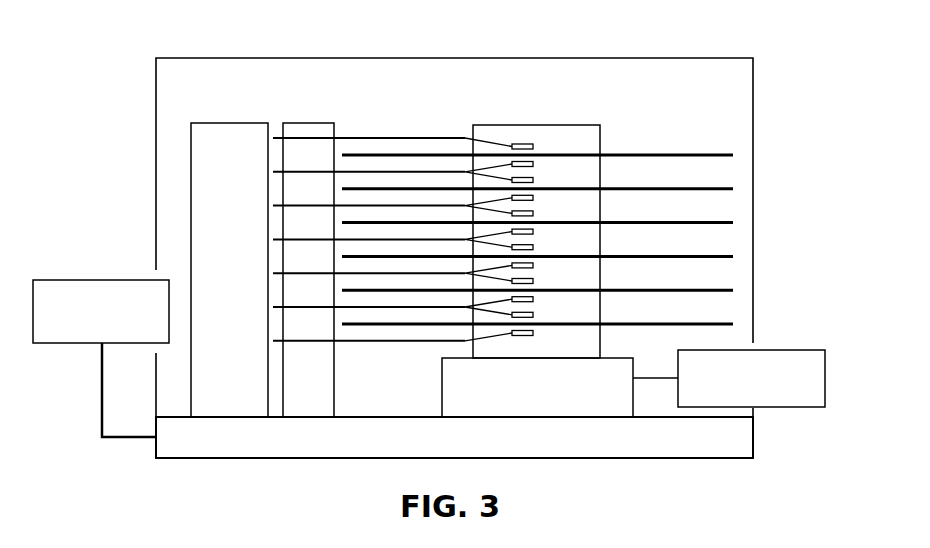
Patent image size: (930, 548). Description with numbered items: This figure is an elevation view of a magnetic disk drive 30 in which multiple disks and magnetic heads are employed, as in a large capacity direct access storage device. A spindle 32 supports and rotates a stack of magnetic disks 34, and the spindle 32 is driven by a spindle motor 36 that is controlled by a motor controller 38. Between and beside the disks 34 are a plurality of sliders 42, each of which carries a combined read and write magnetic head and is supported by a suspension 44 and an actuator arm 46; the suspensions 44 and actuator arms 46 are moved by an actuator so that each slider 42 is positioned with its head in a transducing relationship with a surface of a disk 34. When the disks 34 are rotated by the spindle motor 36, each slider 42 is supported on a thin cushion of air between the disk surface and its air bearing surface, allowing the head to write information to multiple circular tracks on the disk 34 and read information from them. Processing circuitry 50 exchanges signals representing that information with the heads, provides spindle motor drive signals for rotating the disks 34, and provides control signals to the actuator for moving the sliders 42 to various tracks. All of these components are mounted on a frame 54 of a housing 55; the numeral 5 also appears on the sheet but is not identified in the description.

The magnetic disk drive 30 is at (647, 130).
The spindle 32 is at (590, 125).
The magnetic disk 34 is at (733, 157).
The spindle motor 36 is at (552, 398).
The motor controller 38 is at (785, 408).
The slider 42 is at (533, 162).
The suspension 44 is at (503, 170).
The actuator arm 46 is at (443, 171).
The processing circuitry 50 is at (73, 279).
The frame 54 is at (207, 458).
The housing 55 is at (694, 57).
The sheet marker 5 is at (245, 11).